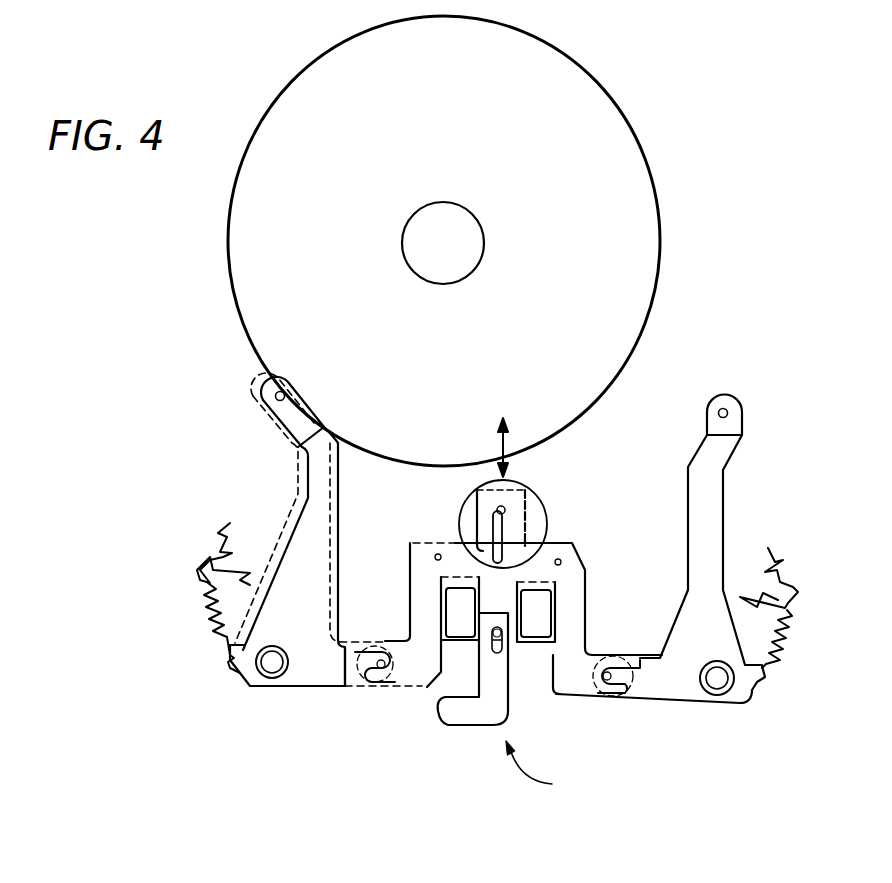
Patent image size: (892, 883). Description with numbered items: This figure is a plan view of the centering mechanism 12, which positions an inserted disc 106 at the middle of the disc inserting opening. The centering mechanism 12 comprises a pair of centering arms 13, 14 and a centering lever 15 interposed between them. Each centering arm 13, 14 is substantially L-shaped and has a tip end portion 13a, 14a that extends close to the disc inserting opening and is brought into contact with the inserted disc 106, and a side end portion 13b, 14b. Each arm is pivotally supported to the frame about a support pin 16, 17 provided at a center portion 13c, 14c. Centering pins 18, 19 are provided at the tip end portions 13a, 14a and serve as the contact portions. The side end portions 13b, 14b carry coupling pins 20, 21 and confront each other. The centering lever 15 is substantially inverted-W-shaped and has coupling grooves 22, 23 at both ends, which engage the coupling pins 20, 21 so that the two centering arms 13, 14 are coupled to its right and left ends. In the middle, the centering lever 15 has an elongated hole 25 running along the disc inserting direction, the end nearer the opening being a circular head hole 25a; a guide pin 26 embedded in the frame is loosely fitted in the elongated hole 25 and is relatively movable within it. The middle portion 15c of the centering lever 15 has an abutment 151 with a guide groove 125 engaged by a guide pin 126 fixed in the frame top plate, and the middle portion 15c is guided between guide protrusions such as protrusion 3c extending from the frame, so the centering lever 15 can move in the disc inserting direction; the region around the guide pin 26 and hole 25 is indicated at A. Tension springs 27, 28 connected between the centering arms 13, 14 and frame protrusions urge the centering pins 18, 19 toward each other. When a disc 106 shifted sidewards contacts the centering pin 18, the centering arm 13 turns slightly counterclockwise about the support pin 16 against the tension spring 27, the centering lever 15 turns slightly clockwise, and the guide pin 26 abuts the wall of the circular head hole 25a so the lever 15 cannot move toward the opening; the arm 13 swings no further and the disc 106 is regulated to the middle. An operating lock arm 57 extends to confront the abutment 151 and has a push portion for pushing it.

The disc 106 is at (635, 229).
The centering arm 13 is at (287, 512).
The tip end portion 13a is at (287, 383).
The side end portion 13b is at (347, 681).
The center portion 13c is at (326, 704).
The centering pin 18 is at (275, 397).
The support pin 16 is at (272, 669).
The tension spring 27 is at (212, 625).
The centering lever 15 is at (507, 644).
The middle portion 15c is at (473, 522).
The guide protrusion 3c is at (456, 605).
The coupling groove 22 is at (357, 646).
The coupling pin 20 is at (386, 686).
The coupling groove 23 is at (638, 661).
The coupling pin 21 is at (608, 698).
The guide groove 125 is at (501, 648).
The guide pin 126 is at (501, 633).
The abutment 151 is at (480, 658).
The operating lock arm 57 is at (480, 708).
The detail region A is at (538, 490).
The guide pin 26 is at (494, 511).
The circular head hole 25a is at (505, 511).
The elongated hole 25 is at (496, 534).
The centering arm 14 is at (710, 561).
The tip end portion 14a is at (715, 398).
The centering pin 19 is at (740, 411).
The side end portion 14b is at (640, 694).
The center portion 14c is at (660, 721).
The support pin 17 is at (688, 688).
The tension spring 28 is at (780, 638).
The centering mechanism 12 is at (540, 769).